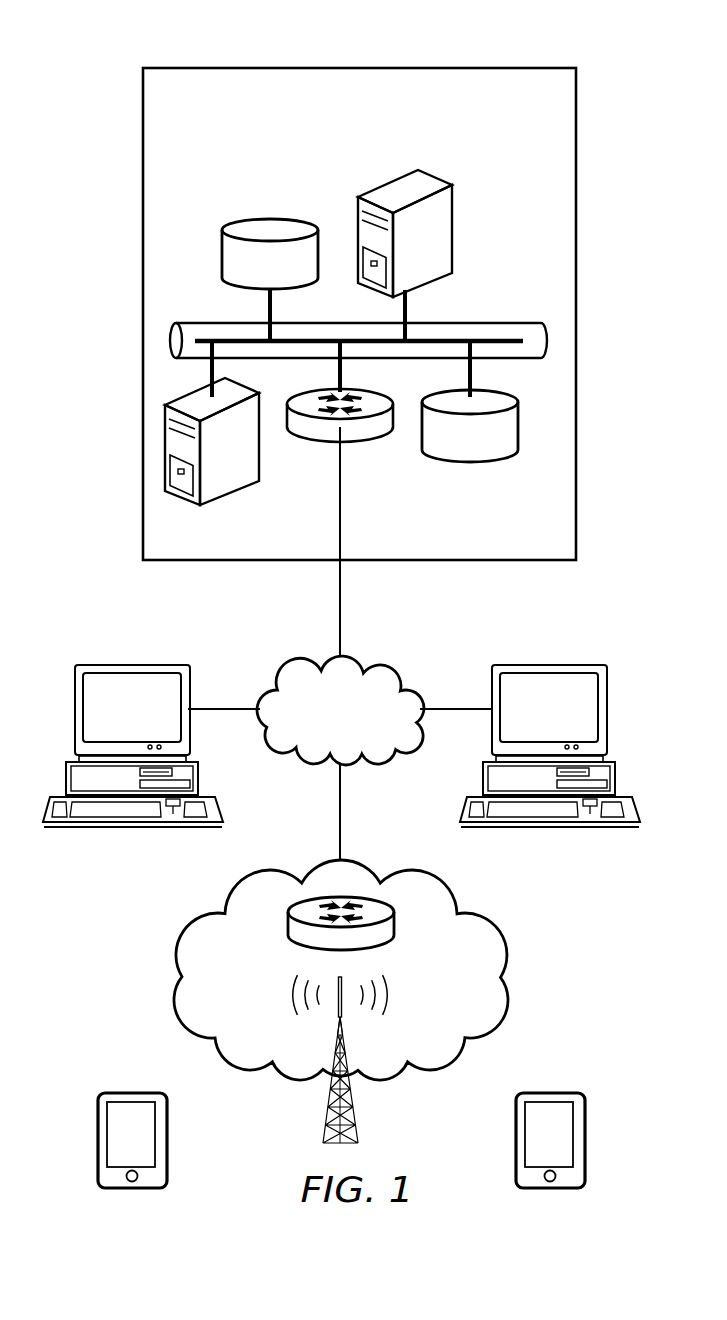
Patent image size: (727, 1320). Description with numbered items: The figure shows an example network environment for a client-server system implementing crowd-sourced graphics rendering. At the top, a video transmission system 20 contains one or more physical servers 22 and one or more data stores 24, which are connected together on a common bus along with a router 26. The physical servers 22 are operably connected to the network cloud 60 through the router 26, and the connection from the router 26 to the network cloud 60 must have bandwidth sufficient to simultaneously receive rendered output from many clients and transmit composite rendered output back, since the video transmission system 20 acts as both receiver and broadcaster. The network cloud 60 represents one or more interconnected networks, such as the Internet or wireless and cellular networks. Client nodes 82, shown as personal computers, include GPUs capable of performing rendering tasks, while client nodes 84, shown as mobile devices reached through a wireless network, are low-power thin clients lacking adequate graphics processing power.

The video transmission system 20 is at (222, 63).
The physical server 22 is at (425, 182).
The data store 24 is at (258, 219).
The router 26 is at (353, 442).
The network cloud 60 is at (405, 673).
The client node 82 is at (132, 830).
The client node 84 is at (131, 1092).